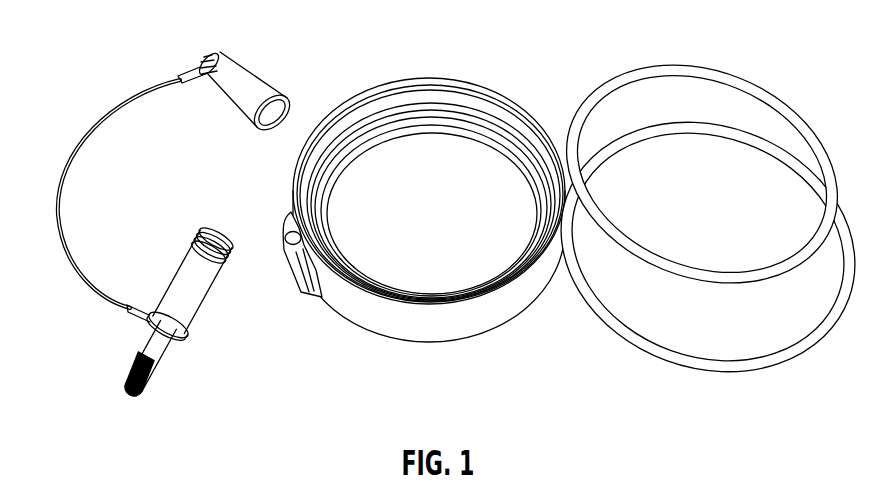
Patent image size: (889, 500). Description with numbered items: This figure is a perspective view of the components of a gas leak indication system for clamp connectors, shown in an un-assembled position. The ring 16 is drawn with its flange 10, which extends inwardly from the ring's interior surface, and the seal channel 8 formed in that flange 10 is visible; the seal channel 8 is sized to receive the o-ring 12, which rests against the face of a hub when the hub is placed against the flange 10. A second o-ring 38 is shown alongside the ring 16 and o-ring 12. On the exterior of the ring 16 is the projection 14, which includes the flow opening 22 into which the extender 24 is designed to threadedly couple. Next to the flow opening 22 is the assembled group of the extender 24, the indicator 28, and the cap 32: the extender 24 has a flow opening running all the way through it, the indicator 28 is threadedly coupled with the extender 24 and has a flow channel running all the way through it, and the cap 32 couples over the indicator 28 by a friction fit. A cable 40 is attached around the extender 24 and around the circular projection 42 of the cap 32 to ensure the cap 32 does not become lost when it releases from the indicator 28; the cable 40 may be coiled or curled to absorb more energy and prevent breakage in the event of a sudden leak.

The seal channel 8 is at (358, 130).
The flange 10 is at (450, 128).
The o-ring 12 is at (770, 352).
The projection 14 is at (282, 240).
The ring 16 is at (503, 93).
The flow opening 22 is at (312, 296).
The extender 24 is at (158, 353).
The indicator 28 is at (195, 290).
The cap 32 is at (250, 83).
The o-ring 38 is at (753, 92).
The cable 40 is at (87, 132).
The circular projection 42 is at (207, 57).